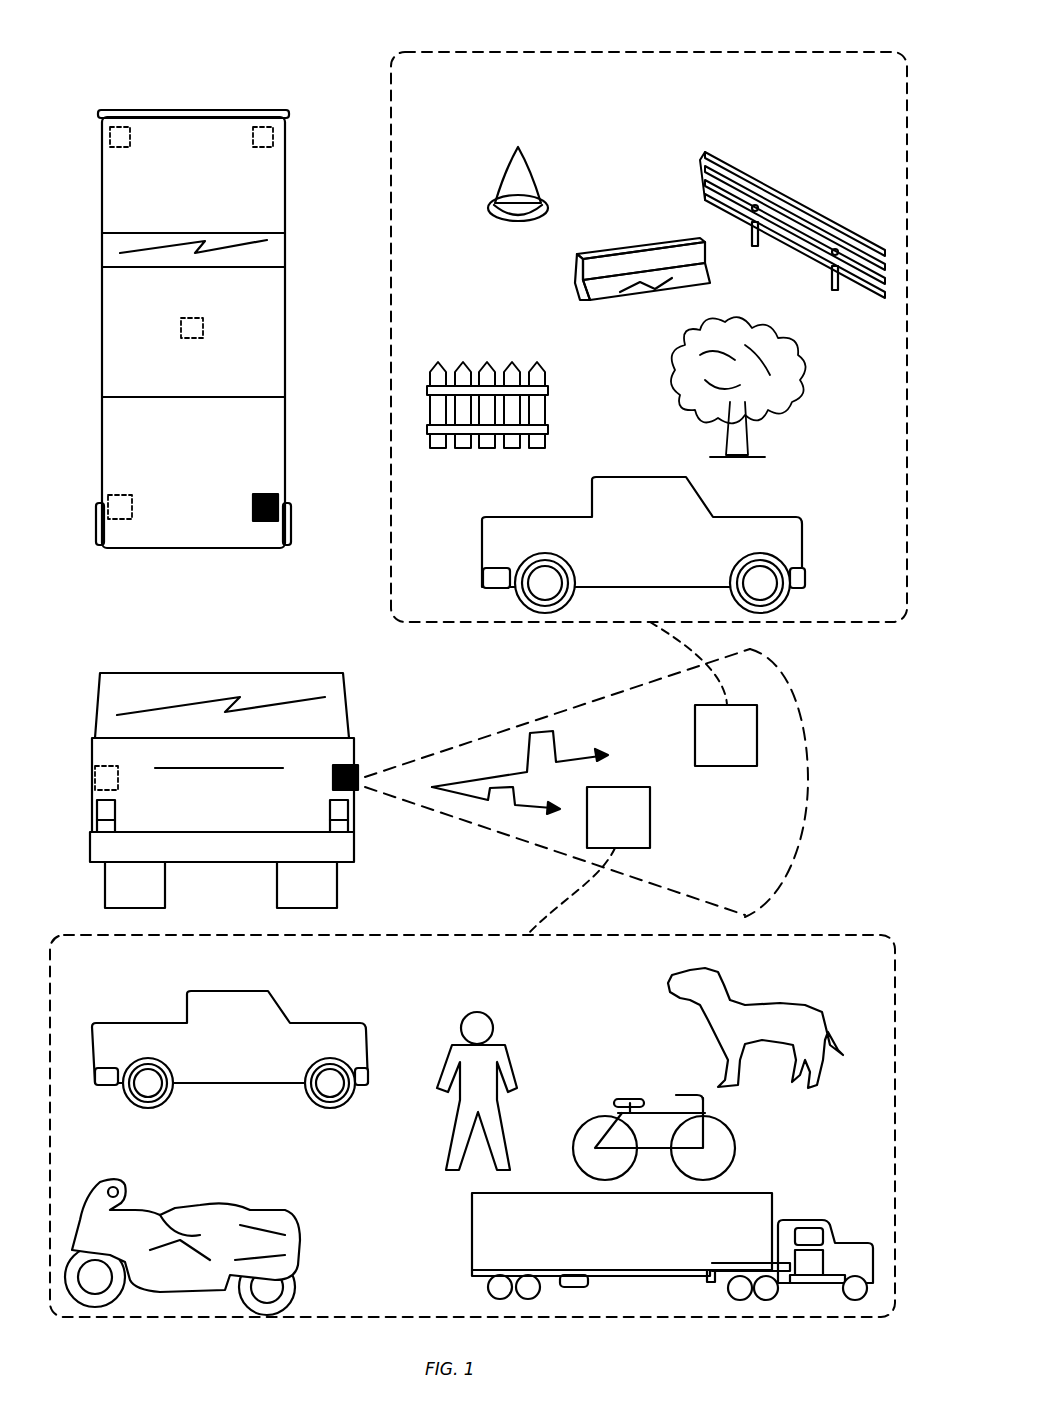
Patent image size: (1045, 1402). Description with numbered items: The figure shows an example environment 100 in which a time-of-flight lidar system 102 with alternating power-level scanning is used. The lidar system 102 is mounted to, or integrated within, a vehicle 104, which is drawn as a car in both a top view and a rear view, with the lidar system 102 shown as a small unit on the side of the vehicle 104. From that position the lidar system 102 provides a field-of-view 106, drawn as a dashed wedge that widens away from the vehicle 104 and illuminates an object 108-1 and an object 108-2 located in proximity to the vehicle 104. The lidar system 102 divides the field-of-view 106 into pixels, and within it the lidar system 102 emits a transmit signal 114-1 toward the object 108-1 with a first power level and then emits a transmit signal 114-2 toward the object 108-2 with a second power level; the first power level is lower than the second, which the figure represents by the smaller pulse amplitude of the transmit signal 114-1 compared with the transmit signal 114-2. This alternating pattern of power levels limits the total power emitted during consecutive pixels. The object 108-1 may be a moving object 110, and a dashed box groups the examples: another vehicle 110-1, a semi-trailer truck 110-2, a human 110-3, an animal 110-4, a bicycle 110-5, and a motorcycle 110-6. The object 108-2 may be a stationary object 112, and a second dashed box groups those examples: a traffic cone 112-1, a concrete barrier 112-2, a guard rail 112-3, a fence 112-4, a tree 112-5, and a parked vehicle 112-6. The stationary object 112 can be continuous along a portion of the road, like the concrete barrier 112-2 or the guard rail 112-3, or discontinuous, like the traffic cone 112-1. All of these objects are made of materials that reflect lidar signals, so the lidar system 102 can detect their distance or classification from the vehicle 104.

The environment 100 is at (318, 42).
The lidar system 102 is at (343, 765).
The vehicle 104 is at (160, 673).
The field-of-view 106 is at (783, 672).
The object 108-1 is at (650, 818).
The object 108-2 is at (757, 735).
The moving object 110 is at (472, 1126).
The vehicle 110-1 is at (233, 991).
The semi-trailer truck 110-2 is at (470, 1240).
The human 110-3 is at (508, 1053).
The animal 110-4 is at (760, 1007).
The bicycle 110-5 is at (733, 1133).
The motorcycle 110-6 is at (173, 1200).
The stationary object 112 is at (649, 337).
The traffic cone 112-1 is at (503, 178).
The concrete barrier 112-2 is at (580, 283).
The guard rail 112-3 is at (705, 165).
The fence 112-4 is at (537, 372).
The tree 112-5 is at (770, 345).
The parked vehicle 112-6 is at (760, 520).
The transmit signal 114-1 is at (535, 808).
The transmit signal 114-2 is at (465, 777).